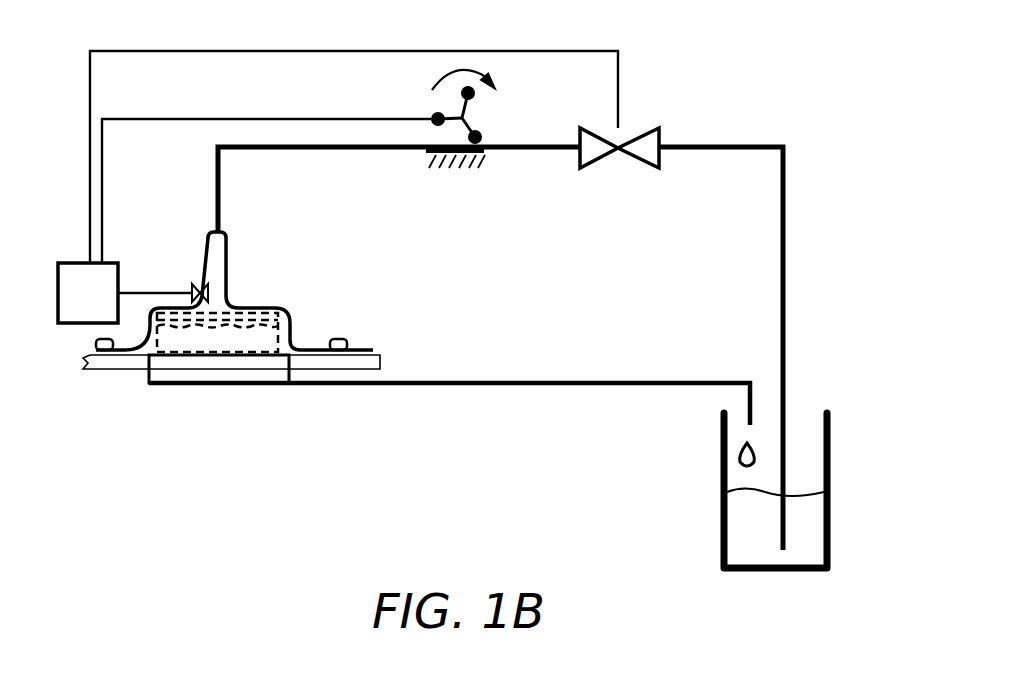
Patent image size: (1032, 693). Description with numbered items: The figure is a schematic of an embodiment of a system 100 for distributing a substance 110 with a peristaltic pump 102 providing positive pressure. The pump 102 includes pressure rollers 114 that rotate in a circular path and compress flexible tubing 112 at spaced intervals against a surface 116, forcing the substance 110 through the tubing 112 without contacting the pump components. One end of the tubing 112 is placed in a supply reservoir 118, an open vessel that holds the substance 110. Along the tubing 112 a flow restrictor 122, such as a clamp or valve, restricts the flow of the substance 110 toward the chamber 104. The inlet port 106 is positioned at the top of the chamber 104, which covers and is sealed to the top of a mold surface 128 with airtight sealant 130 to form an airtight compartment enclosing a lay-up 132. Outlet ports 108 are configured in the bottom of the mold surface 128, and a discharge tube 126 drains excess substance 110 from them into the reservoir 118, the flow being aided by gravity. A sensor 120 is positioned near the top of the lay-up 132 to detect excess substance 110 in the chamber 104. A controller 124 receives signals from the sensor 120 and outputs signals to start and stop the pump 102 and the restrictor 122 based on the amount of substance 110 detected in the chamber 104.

The system 100 is at (796, 104).
The pump 102 is at (485, 119).
The chamber 104 is at (235, 301).
The inlet port 106 is at (214, 233).
The outlet port 108 is at (284, 362).
The substance 110 is at (745, 512).
The tubing 112 is at (373, 149).
The pressure roller 114 is at (431, 118).
The surface 116 is at (431, 154).
The supply reservoir 118 is at (829, 563).
The sensor 120 is at (196, 289).
The flow restrictor 122 is at (617, 158).
The controller 124 is at (82, 263).
The discharge tube 126 is at (526, 383).
The mold surface 128 is at (378, 367).
The airtight sealant 130 is at (346, 346).
The lay-up 132 is at (280, 332).